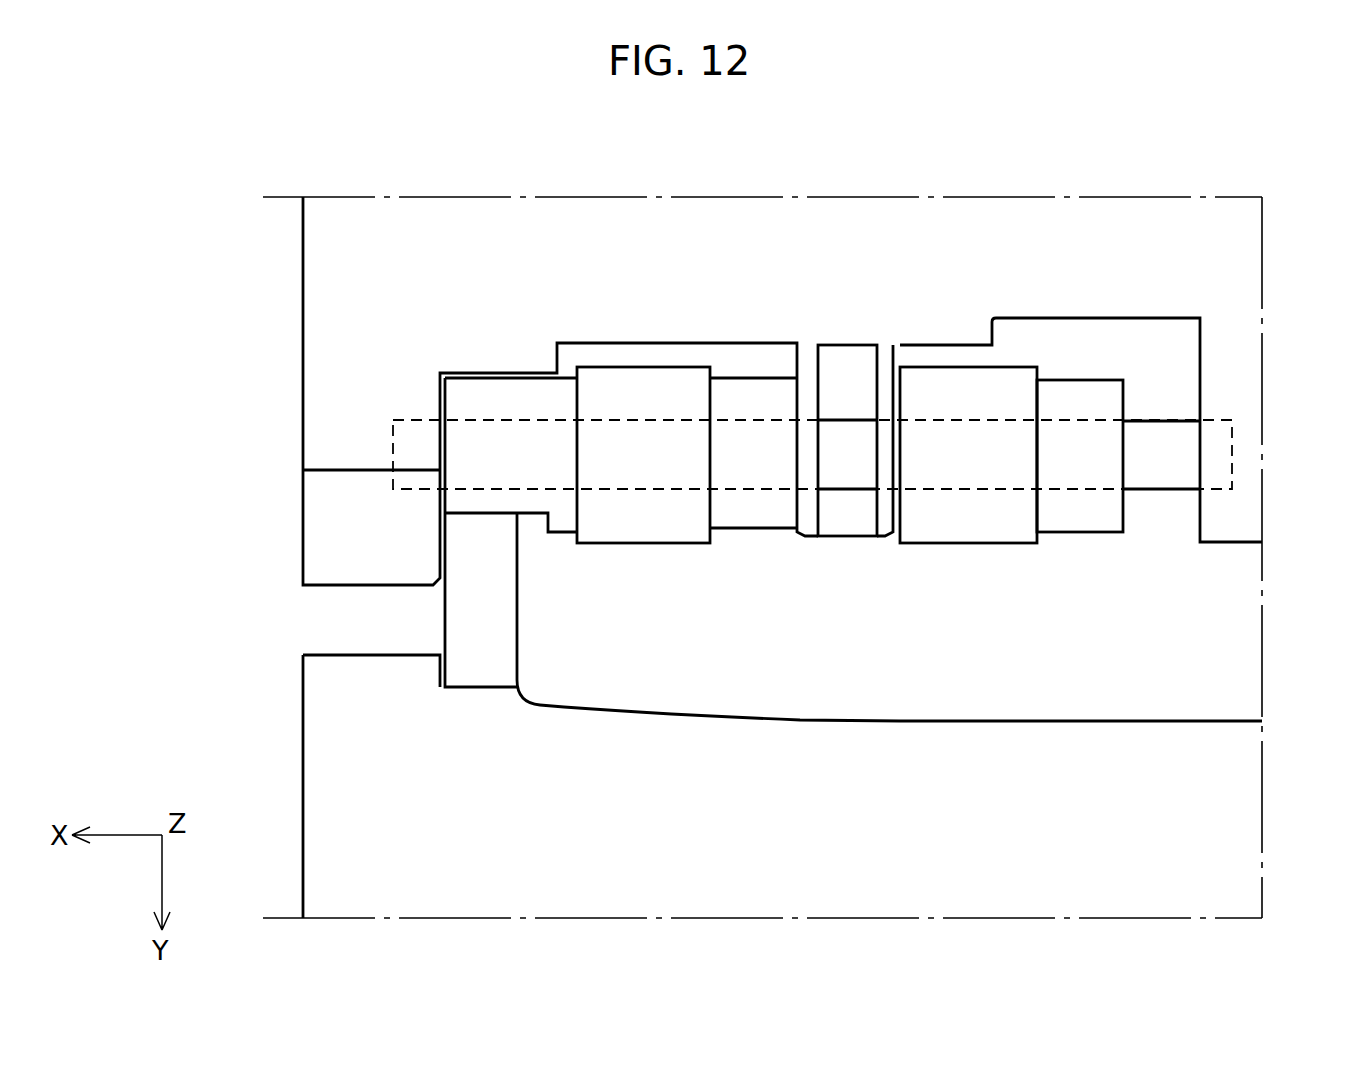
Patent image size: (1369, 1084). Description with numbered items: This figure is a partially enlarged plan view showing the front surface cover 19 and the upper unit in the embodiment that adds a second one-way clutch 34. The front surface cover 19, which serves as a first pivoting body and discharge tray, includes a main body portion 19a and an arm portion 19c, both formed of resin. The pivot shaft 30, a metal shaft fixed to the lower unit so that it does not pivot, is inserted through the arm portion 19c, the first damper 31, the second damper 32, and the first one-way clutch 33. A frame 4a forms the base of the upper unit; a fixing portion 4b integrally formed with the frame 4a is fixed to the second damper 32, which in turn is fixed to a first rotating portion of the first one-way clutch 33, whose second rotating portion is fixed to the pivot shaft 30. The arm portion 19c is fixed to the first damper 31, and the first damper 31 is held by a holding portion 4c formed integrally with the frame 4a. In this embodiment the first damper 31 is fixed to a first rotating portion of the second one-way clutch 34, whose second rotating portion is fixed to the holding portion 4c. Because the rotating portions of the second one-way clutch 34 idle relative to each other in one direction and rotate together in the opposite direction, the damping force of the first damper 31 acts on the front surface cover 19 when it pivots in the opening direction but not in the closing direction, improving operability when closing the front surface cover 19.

The frame 4a is at (885, 217).
The fixing portion 4b is at (885, 390).
The holding portion 4c is at (800, 364).
The front surface cover 19 is at (275, 743).
The main body portion 19a is at (812, 768).
The arm portion 19c is at (508, 635).
The pivot shaft 30 is at (1167, 462).
The first damper 31 is at (643, 522).
The second damper 32 is at (990, 378).
The first one-way clutch 33 is at (1073, 388).
The second one-way clutch 34 is at (760, 522).